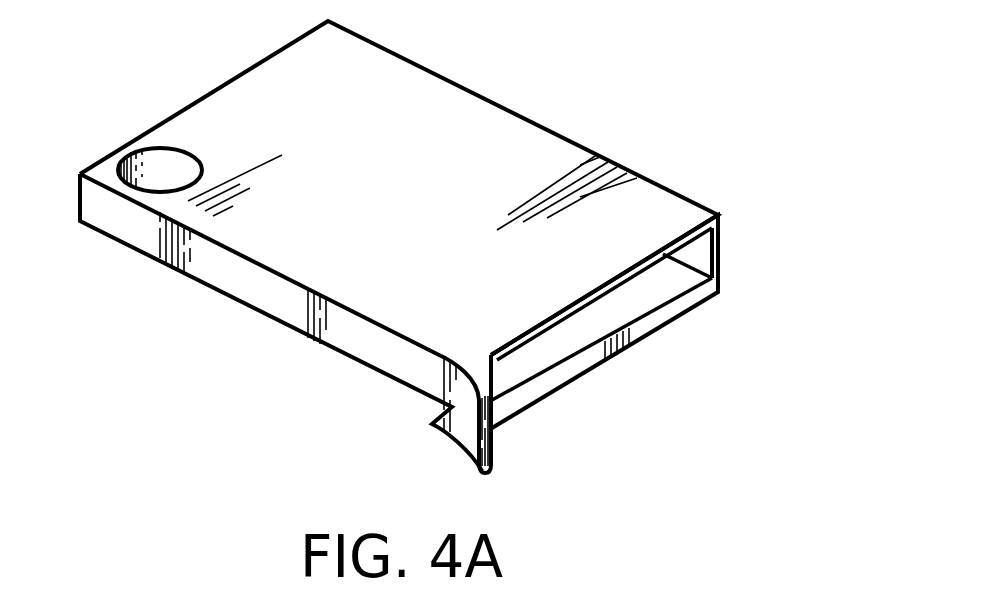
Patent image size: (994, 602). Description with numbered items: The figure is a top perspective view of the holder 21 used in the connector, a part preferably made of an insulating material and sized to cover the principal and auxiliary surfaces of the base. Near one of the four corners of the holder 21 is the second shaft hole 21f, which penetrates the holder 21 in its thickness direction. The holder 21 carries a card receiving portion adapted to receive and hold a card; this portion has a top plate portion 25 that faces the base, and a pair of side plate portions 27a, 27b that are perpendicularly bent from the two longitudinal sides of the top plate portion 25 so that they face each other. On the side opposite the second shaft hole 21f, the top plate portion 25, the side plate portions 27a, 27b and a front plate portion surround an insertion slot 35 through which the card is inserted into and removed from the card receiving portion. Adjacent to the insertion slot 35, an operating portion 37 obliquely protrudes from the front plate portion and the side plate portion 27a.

The holder 21 is at (489, 99).
The second shaft hole 21f is at (160, 168).
The top plate portion 25 is at (597, 157).
The side plate portion 27a is at (243, 285).
The side plate portion 27b is at (718, 256).
The insertion slot 35 is at (653, 297).
The operating portion 37 is at (492, 457).